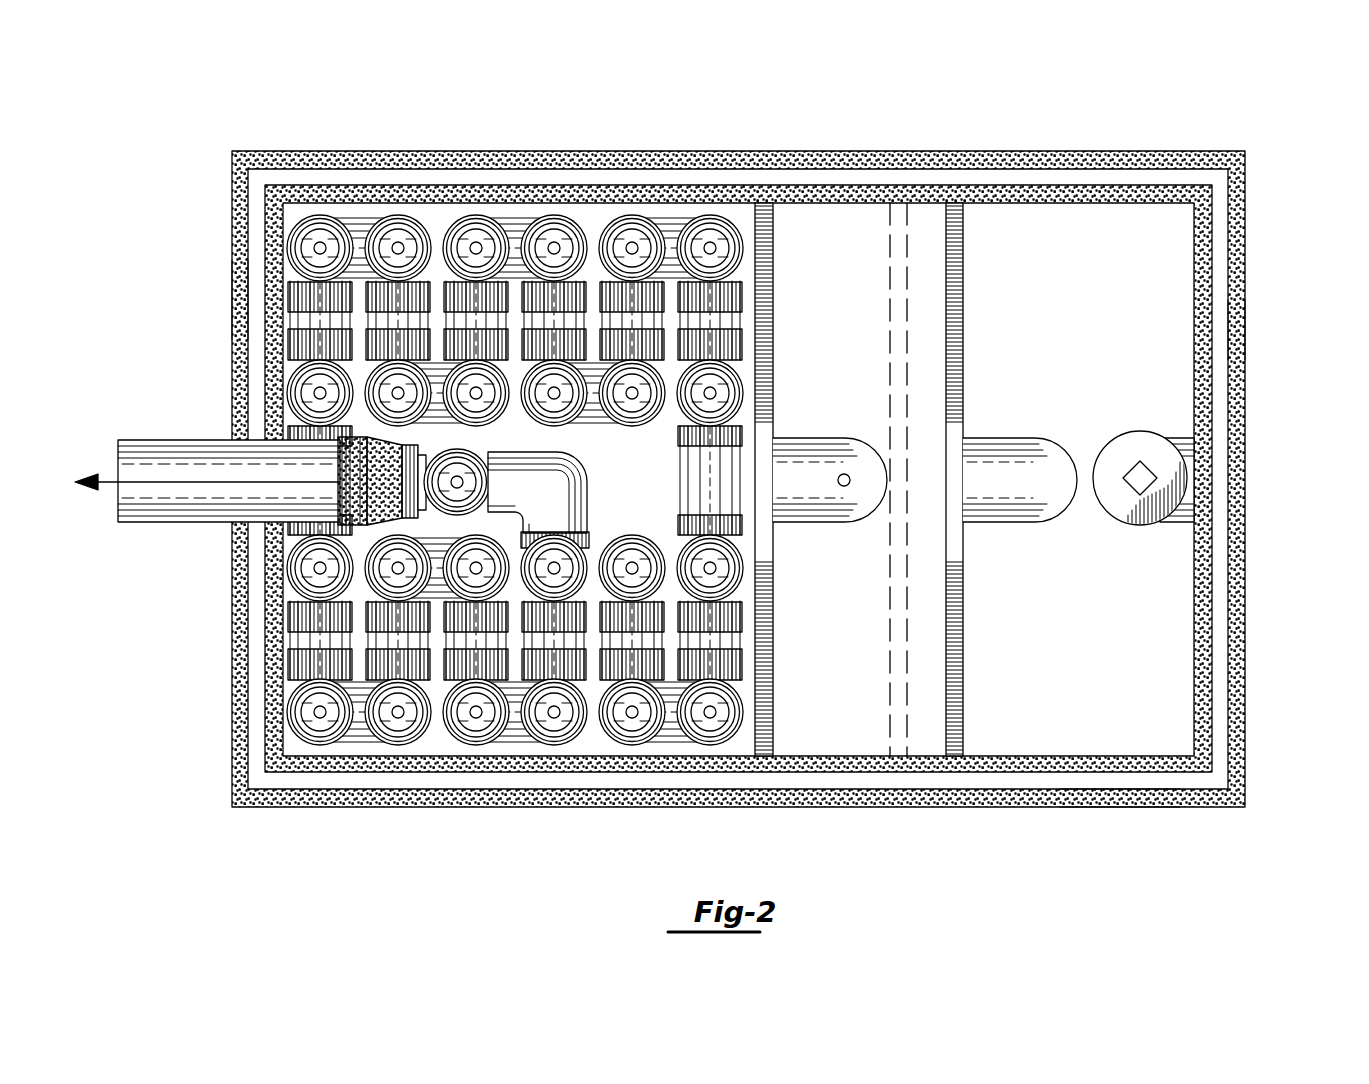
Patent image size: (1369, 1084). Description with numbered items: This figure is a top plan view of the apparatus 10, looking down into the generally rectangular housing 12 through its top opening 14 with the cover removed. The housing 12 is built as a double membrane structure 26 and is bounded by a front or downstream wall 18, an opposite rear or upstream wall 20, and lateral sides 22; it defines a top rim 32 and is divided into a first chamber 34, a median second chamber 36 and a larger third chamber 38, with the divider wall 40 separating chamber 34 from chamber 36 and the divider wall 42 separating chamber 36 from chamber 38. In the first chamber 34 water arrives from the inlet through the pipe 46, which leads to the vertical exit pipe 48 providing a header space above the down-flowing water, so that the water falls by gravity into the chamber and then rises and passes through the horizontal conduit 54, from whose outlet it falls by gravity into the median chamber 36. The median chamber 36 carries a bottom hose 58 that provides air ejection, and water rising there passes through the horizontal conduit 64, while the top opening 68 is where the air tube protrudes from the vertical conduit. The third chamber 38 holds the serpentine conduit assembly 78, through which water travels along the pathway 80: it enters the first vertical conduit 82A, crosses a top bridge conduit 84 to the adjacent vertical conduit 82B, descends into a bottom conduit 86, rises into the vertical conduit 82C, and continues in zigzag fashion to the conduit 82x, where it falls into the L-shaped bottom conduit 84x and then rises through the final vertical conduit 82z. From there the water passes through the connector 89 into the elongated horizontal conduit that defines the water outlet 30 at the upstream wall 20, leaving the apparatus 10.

The apparatus 10 is at (694, 479).
The housing 12 is at (1116, 806).
The top opening 14 is at (1134, 355).
The front or downstream wall 18 is at (1246, 330).
The rear or upstream wall 20 is at (232, 290).
The lateral sides 22 is at (560, 152).
The double membrane structure 26 is at (758, 196).
The water outlet 30 is at (116, 506).
The top rim 32 is at (1003, 750).
The first chamber 34 is at (1168, 703).
The second chamber 36 is at (868, 484).
The third chamber 38 is at (427, 489).
The divider wall 40 is at (966, 632).
The divider wall 42 is at (775, 657).
The pipe 46 is at (1176, 520).
The vertical exit pipe 48 is at (1140, 432).
The horizontal conduit 54 is at (1003, 440).
The bottom hose 58 is at (922, 222).
The horizontal conduit 64 is at (800, 477).
The top opening 68 is at (844, 488).
The serpentine conduit assembly 78 is at (427, 480).
The pathway 80 is at (105, 480).
The first vertical conduit 82A is at (648, 537).
The vertical conduit 82B is at (632, 728).
The vertical conduit 82C is at (722, 737).
The vertical conduit 82x is at (582, 548).
The final vertical conduit 82z is at (470, 452).
The top bridge conduit 84 is at (585, 757).
The L-shaped bottom conduit 84x is at (548, 454).
The bottom conduit 86 is at (676, 732).
The connector 89 is at (380, 442).